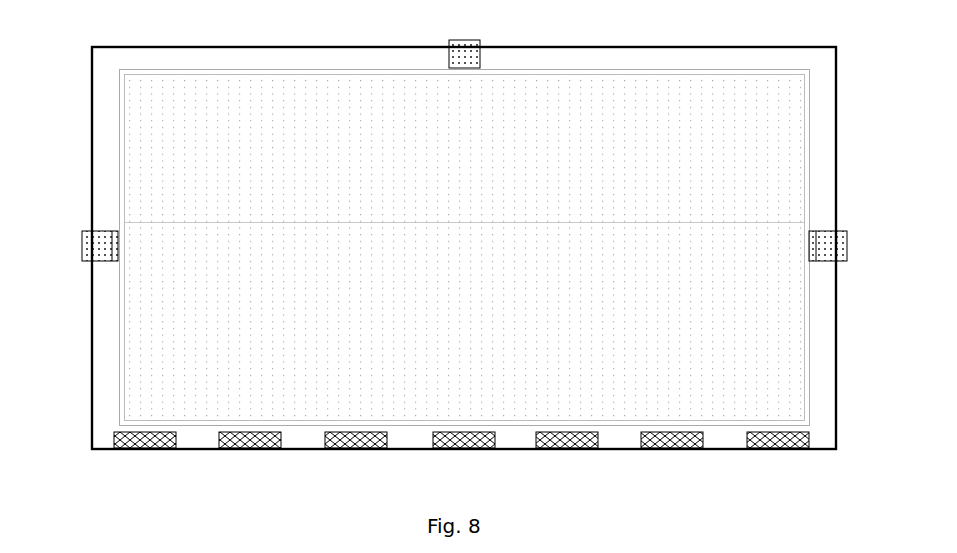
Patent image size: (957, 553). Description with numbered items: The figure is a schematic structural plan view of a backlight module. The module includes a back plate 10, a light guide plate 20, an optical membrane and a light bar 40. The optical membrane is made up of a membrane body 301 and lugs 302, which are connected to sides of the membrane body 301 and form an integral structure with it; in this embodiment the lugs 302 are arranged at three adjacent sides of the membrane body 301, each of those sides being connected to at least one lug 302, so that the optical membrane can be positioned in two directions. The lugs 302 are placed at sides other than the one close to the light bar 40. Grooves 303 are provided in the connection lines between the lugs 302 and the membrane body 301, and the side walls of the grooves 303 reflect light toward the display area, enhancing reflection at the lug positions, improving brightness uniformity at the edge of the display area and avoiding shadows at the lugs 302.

The back plate 10 is at (168, 62).
The light guide plate 20 is at (602, 70).
The membrane body 301 is at (740, 98).
The lug 302 is at (92, 248).
The groove 303 is at (112, 242).
The light bar 40 is at (465, 448).